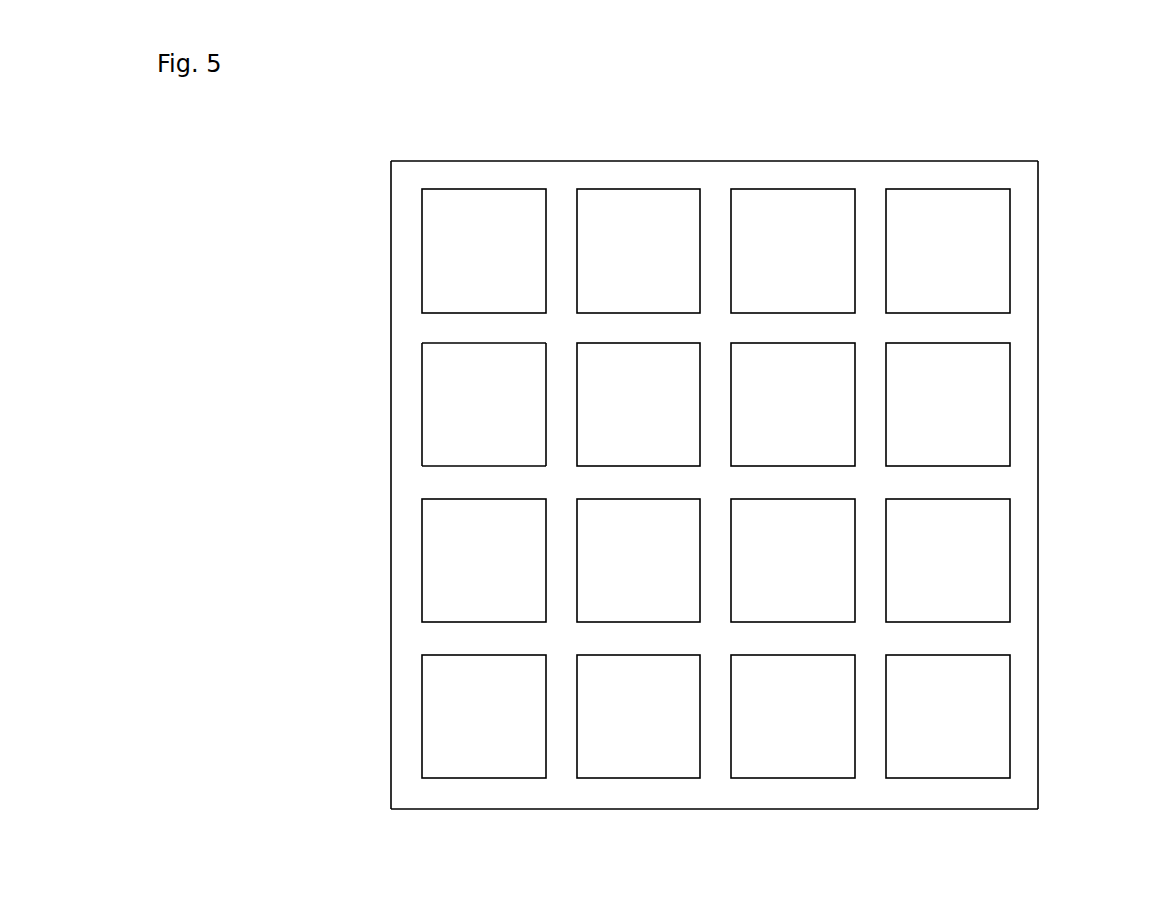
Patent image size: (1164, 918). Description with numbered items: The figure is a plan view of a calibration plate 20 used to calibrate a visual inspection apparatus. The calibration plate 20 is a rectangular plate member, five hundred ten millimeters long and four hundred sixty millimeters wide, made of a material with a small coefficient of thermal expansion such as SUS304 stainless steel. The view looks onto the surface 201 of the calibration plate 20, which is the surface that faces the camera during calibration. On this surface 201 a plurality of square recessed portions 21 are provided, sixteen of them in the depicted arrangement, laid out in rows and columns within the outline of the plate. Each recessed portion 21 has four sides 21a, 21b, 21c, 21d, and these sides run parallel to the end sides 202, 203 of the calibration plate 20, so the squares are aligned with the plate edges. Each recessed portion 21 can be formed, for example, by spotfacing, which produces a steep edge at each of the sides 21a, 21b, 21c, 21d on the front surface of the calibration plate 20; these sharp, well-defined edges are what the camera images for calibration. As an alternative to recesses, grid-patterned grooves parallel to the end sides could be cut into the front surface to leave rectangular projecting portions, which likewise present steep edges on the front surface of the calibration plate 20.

The calibration plate 20 is at (692, 421).
The recessed portion 21 is at (483, 188).
The side of recessed portion 21a is at (473, 342).
The side of recessed portion 21b is at (427, 389).
The side of recessed portion 21c is at (468, 465).
The side of recessed portion 21d is at (543, 392).
The surface of calibration plate 201 is at (1027, 470).
The end side of calibration plate 202 is at (725, 160).
The end side of calibration plate 203 is at (393, 597).